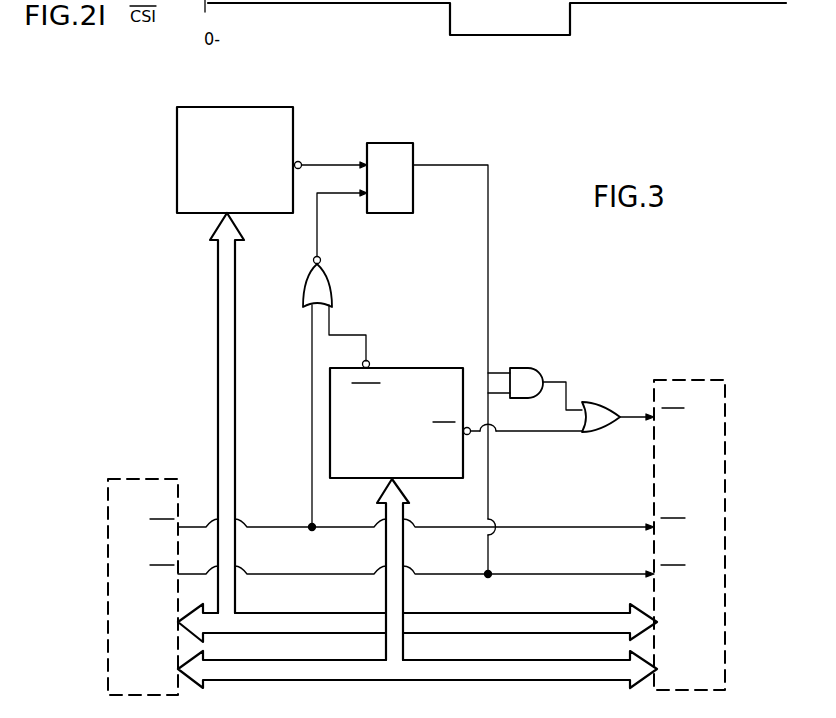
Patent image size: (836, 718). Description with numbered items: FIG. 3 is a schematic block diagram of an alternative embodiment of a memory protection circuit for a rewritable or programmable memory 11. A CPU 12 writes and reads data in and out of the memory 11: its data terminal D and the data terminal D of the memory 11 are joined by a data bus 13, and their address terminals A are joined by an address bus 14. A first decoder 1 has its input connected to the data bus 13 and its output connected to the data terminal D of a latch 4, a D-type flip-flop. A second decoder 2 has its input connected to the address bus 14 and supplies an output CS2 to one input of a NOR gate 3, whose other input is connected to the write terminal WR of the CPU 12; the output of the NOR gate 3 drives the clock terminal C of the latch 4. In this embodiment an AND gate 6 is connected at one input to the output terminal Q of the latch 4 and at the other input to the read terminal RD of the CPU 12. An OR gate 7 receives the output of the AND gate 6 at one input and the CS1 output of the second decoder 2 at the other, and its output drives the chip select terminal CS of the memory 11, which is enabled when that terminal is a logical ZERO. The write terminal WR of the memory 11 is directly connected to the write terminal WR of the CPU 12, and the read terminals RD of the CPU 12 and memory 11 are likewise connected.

The first decoder 1 is at (177, 107).
The second decoder 2 is at (413, 368).
The NOR gate 3 is at (334, 295).
The latch 4 is at (367, 143).
The AND gate 6 is at (525, 368).
The OR gate 7 is at (600, 402).
The memory 11 is at (654, 384).
The CPU 12 is at (143, 477).
The data bus 13 is at (440, 612).
The address bus 14 is at (420, 660).